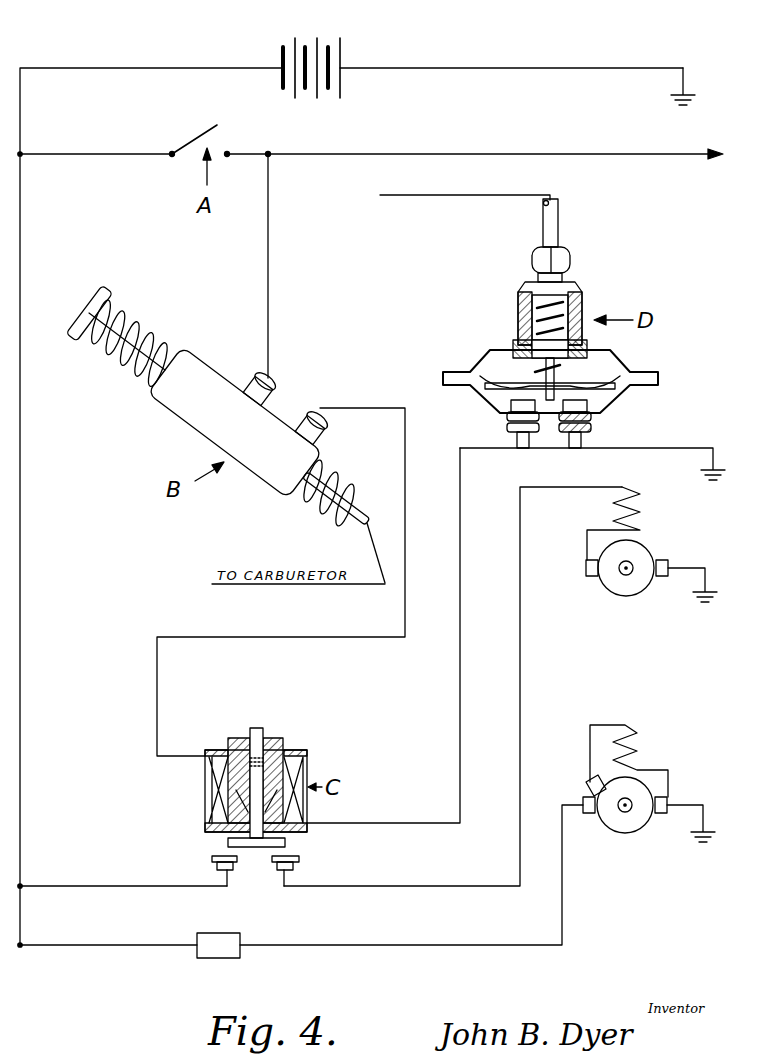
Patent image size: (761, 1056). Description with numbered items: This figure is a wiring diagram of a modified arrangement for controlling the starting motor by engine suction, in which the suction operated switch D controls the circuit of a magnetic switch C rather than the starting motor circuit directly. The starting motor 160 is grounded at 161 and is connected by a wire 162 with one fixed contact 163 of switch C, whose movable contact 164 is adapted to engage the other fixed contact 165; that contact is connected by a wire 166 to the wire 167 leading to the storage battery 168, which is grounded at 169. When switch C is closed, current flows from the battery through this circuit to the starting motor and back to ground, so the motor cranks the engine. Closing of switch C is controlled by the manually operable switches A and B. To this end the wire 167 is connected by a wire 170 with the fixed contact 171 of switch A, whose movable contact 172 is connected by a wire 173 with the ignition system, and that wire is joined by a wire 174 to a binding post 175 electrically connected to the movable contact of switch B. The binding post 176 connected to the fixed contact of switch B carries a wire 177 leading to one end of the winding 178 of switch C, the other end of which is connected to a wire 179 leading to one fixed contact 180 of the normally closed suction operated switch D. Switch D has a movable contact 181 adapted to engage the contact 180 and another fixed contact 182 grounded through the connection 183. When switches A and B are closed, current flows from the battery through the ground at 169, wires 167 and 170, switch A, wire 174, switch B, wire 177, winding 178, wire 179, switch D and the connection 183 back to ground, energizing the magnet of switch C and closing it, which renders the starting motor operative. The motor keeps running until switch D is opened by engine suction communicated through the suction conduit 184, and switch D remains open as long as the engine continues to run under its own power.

The starting motor 160 is at (635, 590).
The ground 161 is at (693, 567).
The wire 162 is at (521, 641).
The fixed contact 163 is at (301, 866).
The movable contact 164 is at (286, 843).
The fixed contact 165 is at (236, 868).
The wire 166 is at (125, 885).
The wire 167 is at (173, 67).
The storage battery 168 is at (323, 38).
The ground 169 is at (583, 67).
The wire 170 is at (99, 154).
The fixed contact 171 is at (172, 152).
The movable contact 172 is at (212, 127).
The wire 173 is at (311, 153).
The wire 174 is at (270, 258).
The binding post 175 is at (273, 380).
The binding post 176 is at (318, 410).
The wire 177 is at (406, 531).
The winding 178 is at (214, 794).
The wire 179 is at (461, 760).
The fixed contact 180 is at (522, 449).
The movable contact 181 is at (600, 407).
The fixed contact 182 is at (577, 449).
The connection 183 is at (663, 450).
The suction conduit 184 is at (560, 226).